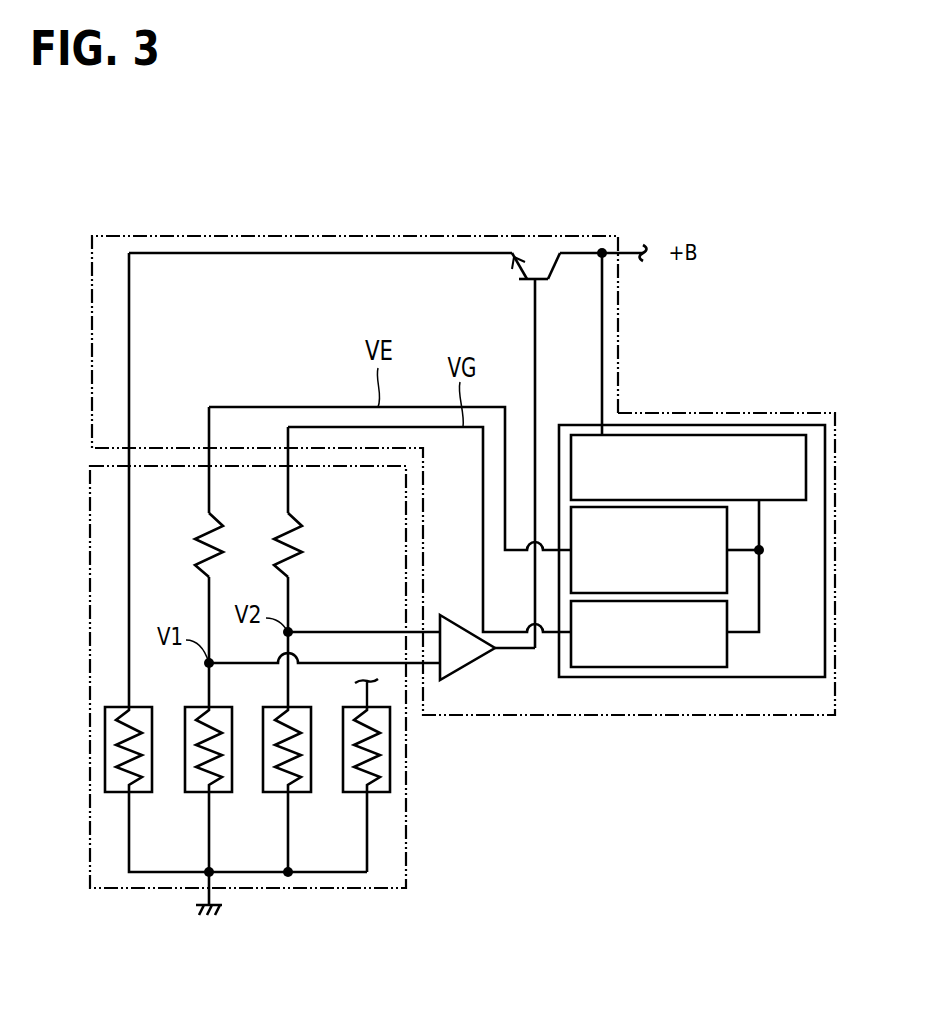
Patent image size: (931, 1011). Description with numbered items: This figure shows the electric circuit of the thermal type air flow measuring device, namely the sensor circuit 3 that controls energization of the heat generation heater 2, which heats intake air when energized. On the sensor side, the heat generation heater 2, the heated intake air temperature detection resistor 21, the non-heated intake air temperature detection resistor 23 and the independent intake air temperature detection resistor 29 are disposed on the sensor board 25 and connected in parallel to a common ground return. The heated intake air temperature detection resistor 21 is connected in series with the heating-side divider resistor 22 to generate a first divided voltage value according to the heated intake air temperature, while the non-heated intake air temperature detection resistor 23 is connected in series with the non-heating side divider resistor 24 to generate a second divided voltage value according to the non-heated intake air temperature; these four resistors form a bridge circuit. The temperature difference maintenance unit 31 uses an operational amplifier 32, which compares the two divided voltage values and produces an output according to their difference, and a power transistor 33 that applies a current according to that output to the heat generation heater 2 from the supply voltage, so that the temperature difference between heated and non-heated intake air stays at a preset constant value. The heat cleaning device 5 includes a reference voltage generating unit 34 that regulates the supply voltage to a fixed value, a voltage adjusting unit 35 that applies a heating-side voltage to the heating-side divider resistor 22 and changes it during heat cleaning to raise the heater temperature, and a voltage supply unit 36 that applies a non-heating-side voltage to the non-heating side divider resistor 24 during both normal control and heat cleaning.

The heat generation heater 2 is at (120, 794).
The sensor circuit 3 is at (364, 236).
The heat cleaning device 5 is at (717, 426).
The heated intake air temperature detection resistor 21 is at (197, 794).
The heating-side divider resistor 22 is at (200, 541).
The non-heated intake air temperature detection resistor 23 is at (273, 794).
The non-heating side divider resistor 24 is at (278, 541).
The sensor board 25 is at (157, 890).
The intake air temperature detection resistor 29 is at (354, 794).
The temperature difference maintenance unit 31 is at (529, 670).
The operational amplifier 32 is at (453, 665).
The power transistor 33 is at (544, 281).
The reference voltage generating unit 34 is at (806, 480).
The voltage adjusting unit 35 is at (727, 568).
The voltage supply unit 36 is at (727, 650).